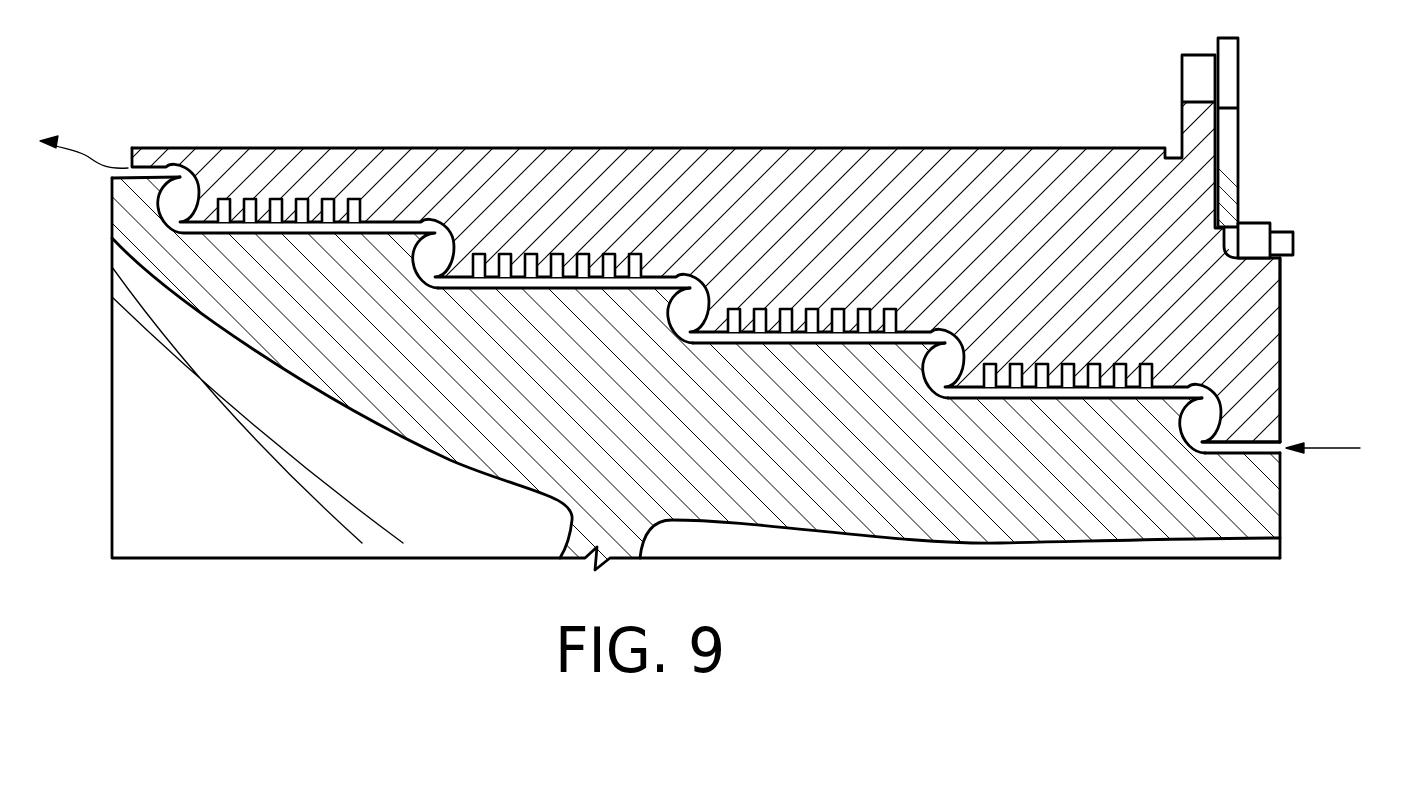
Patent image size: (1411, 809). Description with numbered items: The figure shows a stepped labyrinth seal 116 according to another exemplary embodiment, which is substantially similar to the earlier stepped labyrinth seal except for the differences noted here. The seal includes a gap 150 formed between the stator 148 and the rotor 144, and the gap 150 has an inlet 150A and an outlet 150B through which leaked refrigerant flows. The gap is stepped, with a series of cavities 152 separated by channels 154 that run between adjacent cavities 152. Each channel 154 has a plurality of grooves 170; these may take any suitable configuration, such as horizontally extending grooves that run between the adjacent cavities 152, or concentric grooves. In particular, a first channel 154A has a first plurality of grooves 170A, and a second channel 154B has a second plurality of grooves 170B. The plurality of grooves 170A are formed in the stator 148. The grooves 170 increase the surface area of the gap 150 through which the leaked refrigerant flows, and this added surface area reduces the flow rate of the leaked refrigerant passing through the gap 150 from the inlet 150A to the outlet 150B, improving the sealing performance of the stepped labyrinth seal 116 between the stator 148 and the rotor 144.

The stepped labyrinth seal 116 is at (1291, 460).
The rotor 144 is at (1282, 525).
The stator 148 is at (1281, 328).
The gap 150 is at (1088, 396).
The inlet 150A is at (1282, 441).
The outlet 150B is at (128, 168).
The cavity 152 is at (440, 240).
The channel 154 is at (493, 279).
The first channel 154A is at (1045, 396).
The second channel 154B is at (838, 345).
The grooves 170 is at (556, 255).
The first plurality of grooves 170A is at (1073, 365).
The second plurality of grooves 170B is at (814, 310).